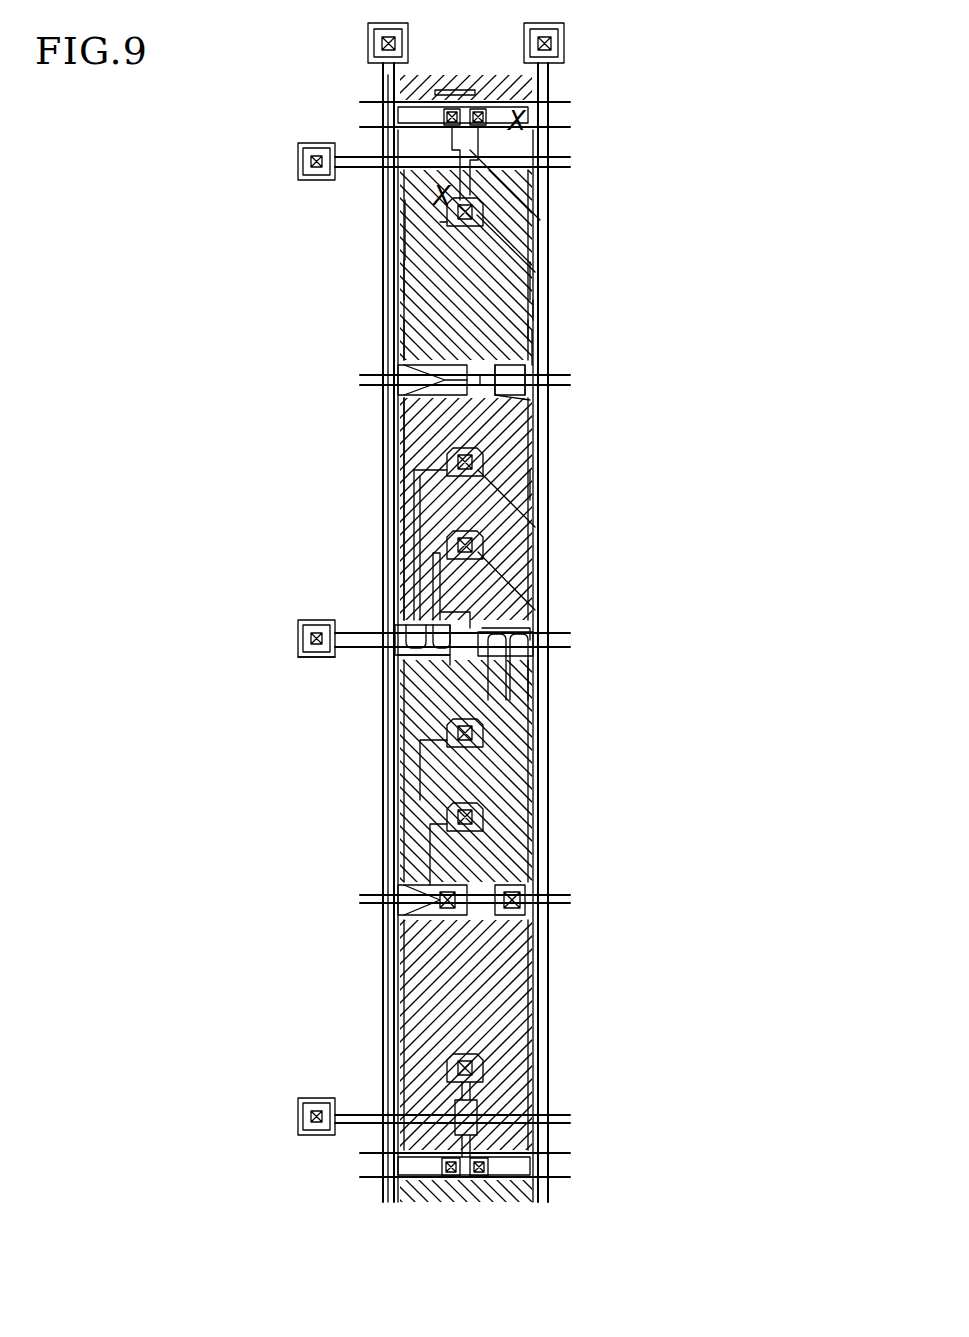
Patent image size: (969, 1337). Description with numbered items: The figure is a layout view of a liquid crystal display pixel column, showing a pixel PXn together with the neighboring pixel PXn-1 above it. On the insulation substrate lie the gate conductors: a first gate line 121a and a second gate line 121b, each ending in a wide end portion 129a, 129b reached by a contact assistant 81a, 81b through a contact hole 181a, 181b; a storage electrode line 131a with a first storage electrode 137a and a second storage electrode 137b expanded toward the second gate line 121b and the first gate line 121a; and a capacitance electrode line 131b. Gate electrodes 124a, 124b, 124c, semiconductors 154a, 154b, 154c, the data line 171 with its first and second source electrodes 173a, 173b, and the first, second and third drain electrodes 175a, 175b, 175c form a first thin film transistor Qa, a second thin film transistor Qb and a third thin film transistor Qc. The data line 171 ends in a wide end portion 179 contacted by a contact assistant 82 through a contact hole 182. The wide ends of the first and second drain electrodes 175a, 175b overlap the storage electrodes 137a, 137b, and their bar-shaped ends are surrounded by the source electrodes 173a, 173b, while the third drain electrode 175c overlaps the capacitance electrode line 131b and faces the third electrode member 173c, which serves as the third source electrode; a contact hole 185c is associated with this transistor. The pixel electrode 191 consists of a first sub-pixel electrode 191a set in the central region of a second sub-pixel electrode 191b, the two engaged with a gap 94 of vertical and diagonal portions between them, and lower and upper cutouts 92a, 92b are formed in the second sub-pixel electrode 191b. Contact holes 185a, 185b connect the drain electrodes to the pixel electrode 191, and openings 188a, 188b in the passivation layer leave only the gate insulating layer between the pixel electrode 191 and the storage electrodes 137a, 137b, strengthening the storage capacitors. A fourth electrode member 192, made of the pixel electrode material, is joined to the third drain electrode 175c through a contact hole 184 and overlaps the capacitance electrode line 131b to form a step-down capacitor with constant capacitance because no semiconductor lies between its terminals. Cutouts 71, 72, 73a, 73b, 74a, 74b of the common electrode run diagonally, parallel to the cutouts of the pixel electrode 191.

The contact hole 182 is at (378, 44).
The contact assistant 82 is at (372, 62).
The end portion of data line 179 is at (400, 58).
The semiconductor 154c is at (458, 105).
The gate electrode 124c is at (450, 128).
The third drain electrode 175c is at (472, 118).
The capacitance electrode line 131b is at (570, 126).
The second gate line 121b is at (356, 160).
The contact assistant 81b is at (310, 146).
The contact hole 181b is at (308, 160).
The end portion of second gate line 129b is at (310, 182).
The data line 171 is at (392, 186).
The cutout 74b is at (540, 196).
The third thin film transistor Qc is at (500, 182).
The upper cutout 92b is at (542, 222).
The cutout 73b is at (538, 270).
The contact hole 185c is at (460, 214).
The third electrode member 173c is at (440, 272).
The gap 94 is at (430, 302).
The second sub-pixel electrode 191b is at (538, 300).
The first sub-pixel electrode 191a is at (538, 322).
The pixel electrode 191 is at (645, 290).
The second storage electrode 137b is at (445, 346).
The cutout 72 is at (540, 352).
The n-th pixel PXn is at (638, 334).
The (n-1)-th pixel PXn-1 is at (596, 74).
The storage electrode line 131a is at (362, 386).
The first storage electrode 137a is at (528, 370).
The opening 188a is at (570, 376).
The opening 188b is at (530, 400).
The cutout 71 is at (402, 430).
The contact hole 185a is at (478, 462).
The cutout 73a is at (538, 482).
The first drain electrode 175a is at (410, 500).
The lower cutout 92a is at (540, 522).
The contact hole 185b is at (478, 546).
The semiconductor 154a is at (416, 620).
The cutout 74a is at (512, 592).
The first thin film transistor Qa is at (396, 622).
The contact assistant 81a is at (310, 624).
The second drain electrode 175b is at (445, 612).
The first source electrode 173a is at (395, 632).
The contact hole 181a is at (308, 640).
The semiconductor 154b is at (536, 636).
The second source electrode 173b is at (525, 650).
The end portion of first gate line 129a is at (310, 660).
The first gate line 121a is at (356, 648).
The second thin film transistor Qb is at (466, 652).
The gate electrode 124b is at (505, 660).
The gate electrode 124a is at (405, 658).
The fourth electrode member 192 is at (500, 1150).
The contact hole 184 is at (485, 1168).